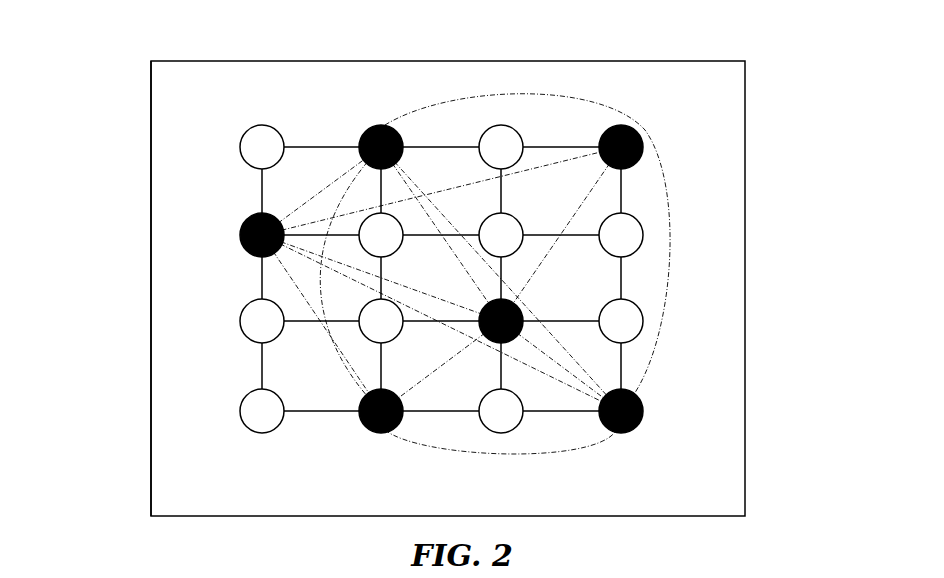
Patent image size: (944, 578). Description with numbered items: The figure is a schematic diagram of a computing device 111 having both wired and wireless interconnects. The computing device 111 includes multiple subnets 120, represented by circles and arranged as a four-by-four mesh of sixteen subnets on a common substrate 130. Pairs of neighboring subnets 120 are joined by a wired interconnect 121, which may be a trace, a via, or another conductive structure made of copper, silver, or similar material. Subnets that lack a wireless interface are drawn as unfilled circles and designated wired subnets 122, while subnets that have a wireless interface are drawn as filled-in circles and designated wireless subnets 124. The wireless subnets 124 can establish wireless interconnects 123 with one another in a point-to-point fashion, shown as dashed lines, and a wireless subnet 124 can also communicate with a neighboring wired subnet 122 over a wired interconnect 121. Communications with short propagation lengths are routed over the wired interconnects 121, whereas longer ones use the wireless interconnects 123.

The computing device 111 is at (762, 110).
The subnets 120 is at (114, 106).
The wired interconnect 121 is at (262, 192).
The wired subnets 122 is at (241, 139).
The wireless interconnects 123 is at (577, 174).
The wireless subnets 124 is at (363, 134).
The common substrate 130 is at (151, 358).